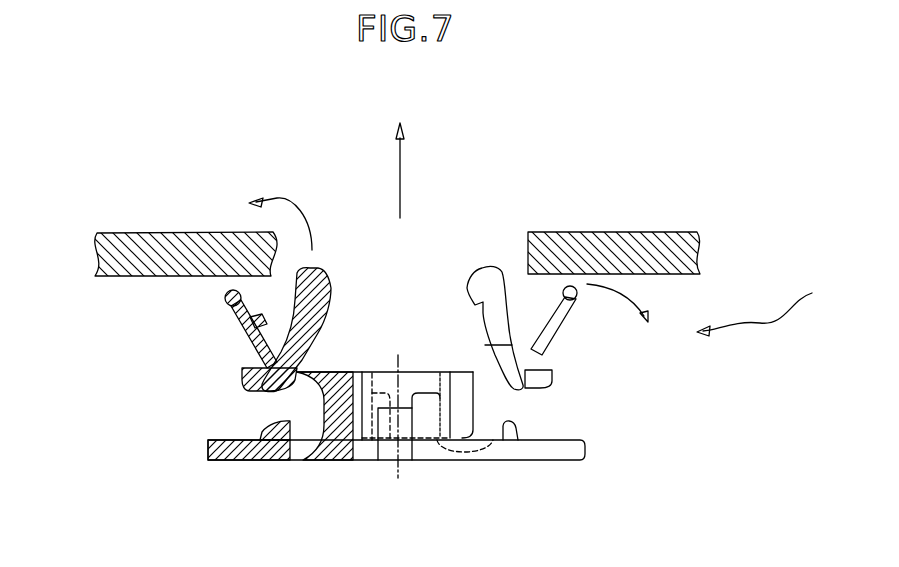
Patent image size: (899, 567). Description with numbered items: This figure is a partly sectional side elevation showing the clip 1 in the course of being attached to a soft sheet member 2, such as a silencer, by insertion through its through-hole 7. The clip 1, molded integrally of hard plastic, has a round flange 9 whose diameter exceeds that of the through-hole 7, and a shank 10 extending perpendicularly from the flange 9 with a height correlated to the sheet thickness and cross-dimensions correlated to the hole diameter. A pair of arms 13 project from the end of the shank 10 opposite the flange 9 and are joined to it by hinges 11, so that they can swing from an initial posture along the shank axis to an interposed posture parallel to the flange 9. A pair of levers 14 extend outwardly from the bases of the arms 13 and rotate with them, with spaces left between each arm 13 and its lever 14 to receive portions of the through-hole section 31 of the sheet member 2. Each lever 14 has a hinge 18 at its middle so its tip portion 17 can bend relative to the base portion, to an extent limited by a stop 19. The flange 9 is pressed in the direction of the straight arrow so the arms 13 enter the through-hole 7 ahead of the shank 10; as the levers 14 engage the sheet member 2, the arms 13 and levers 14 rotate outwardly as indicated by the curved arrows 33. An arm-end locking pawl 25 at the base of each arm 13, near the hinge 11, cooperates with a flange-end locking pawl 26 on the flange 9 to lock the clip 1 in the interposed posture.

The clip 1 is at (822, 301).
The sheet member 2 is at (120, 233).
The through-hole 7 is at (448, 253).
The flange 9 is at (227, 462).
The shank 10 is at (476, 409).
The hinge 11 is at (295, 394).
The arm 13 is at (467, 316).
The lever 14 is at (258, 359).
The tip portion 17 is at (220, 296).
The hinge 18 is at (228, 313).
The stop 19 is at (546, 330).
The arm-end locking pawl 25 is at (240, 380).
The flange-end locking pawl 26 is at (257, 461).
The through-hole section 31 is at (279, 237).
The curved arrows 33 is at (278, 197).